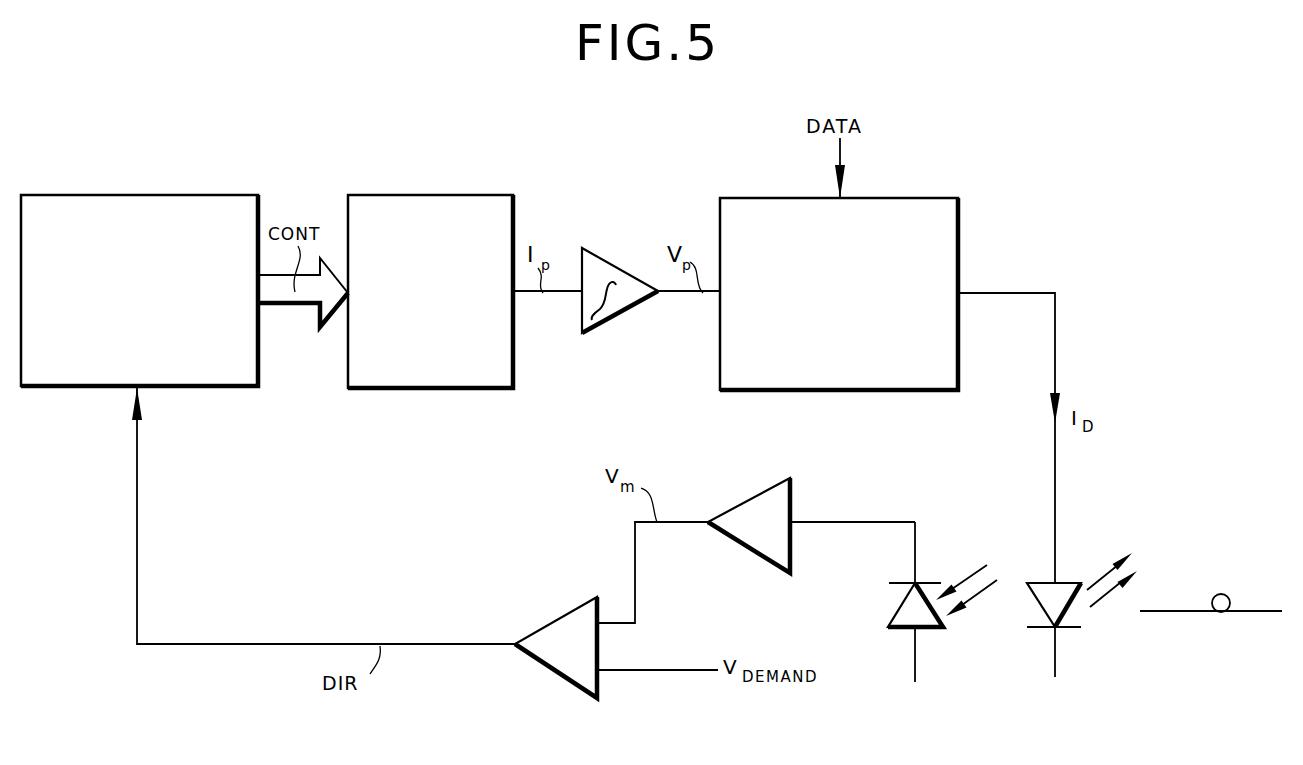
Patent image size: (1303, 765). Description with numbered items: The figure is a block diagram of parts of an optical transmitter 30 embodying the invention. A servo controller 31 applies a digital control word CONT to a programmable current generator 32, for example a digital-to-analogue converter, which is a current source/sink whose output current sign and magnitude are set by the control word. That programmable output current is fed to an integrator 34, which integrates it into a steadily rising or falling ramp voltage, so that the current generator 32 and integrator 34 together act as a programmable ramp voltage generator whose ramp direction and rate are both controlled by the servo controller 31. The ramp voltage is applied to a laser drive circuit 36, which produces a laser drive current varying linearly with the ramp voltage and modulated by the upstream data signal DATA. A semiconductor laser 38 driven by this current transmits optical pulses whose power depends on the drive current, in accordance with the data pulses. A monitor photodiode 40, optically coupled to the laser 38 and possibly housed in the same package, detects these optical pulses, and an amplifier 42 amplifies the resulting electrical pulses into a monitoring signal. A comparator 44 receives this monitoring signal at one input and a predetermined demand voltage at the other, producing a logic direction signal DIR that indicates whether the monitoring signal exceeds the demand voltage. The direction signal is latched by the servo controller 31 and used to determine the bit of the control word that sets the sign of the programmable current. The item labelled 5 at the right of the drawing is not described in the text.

The optical transmitter 30 is at (105, 90).
The servo controller 31 is at (181, 195).
The programmable current generator 32 is at (425, 195).
The integrator 34 is at (620, 266).
The laser drive circuit 36 is at (902, 198).
The semiconductor laser 38 is at (1070, 612).
The monitor photodiode 40 is at (947, 630).
The amplifier 42 is at (758, 494).
The comparator 44 is at (528, 634).
The optical disc 5 is at (1224, 568).